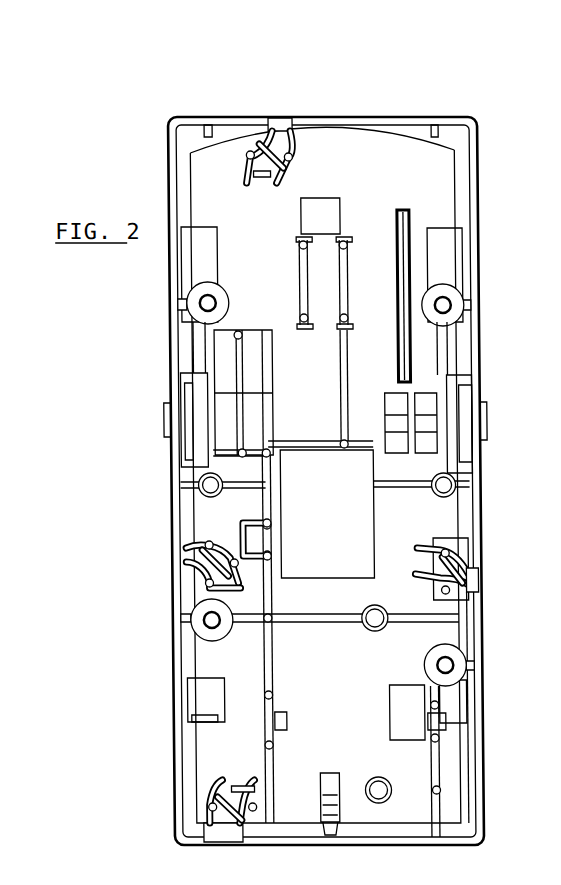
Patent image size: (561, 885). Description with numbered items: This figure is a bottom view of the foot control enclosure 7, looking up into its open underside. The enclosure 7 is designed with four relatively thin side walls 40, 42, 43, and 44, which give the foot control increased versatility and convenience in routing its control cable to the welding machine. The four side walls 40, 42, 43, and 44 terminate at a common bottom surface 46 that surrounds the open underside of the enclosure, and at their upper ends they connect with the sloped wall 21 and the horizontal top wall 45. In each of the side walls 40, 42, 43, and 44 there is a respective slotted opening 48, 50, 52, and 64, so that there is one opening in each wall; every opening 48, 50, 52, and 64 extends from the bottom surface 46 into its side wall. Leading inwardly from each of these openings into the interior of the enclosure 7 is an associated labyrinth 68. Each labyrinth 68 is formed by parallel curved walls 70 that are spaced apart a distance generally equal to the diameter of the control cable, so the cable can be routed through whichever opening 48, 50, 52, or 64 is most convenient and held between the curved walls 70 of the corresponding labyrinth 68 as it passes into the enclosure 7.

The foot control enclosure 7 is at (160, 356).
The sloped wall 21 is at (383, 180).
The side wall 40 is at (170, 457).
The side wall 42 is at (383, 845).
The side wall 43 is at (471, 292).
The side wall 44 is at (386, 117).
The horizontal top wall 45 is at (303, 662).
The bottom surface 46 is at (173, 770).
The slotted opening 48 is at (171, 556).
The slotted opening 50 is at (212, 845).
The slotted opening 52 is at (480, 585).
The slotted opening 64 is at (276, 118).
The labyrinth 68 is at (169, 558).
The curved walls 70 is at (287, 128).